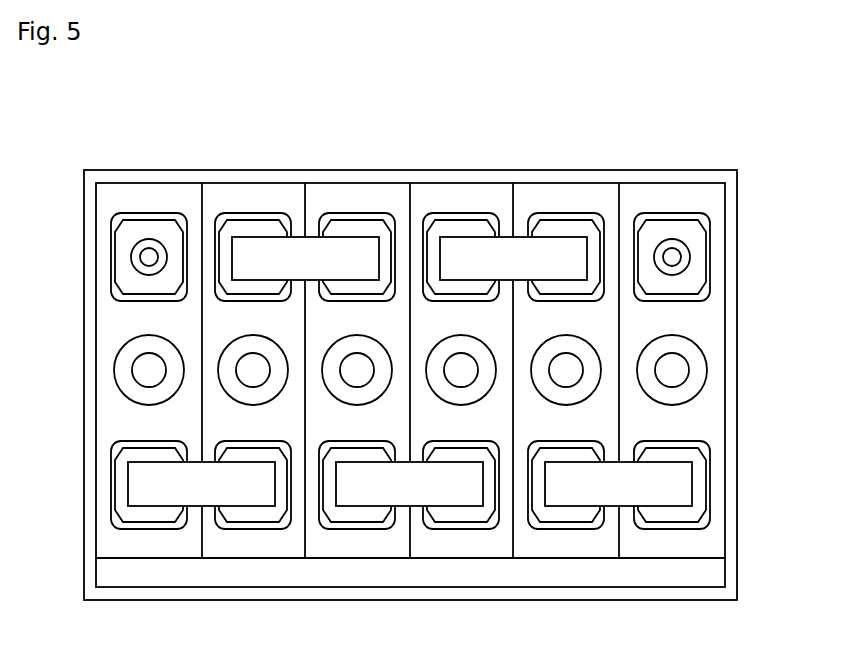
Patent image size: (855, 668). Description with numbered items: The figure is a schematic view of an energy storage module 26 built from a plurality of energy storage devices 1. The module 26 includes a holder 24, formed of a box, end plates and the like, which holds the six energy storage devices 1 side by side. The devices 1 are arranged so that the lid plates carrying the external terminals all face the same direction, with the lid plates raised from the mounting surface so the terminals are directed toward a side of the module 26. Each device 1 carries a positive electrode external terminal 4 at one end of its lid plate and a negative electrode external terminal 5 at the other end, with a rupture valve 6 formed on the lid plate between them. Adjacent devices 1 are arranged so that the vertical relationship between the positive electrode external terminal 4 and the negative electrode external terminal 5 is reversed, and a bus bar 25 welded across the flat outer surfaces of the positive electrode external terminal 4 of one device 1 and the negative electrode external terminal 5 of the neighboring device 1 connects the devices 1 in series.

The energy storage device 1 is at (152, 197).
The positive electrode external terminal 4 is at (112, 257).
The negative electrode external terminal 5 is at (238, 223).
The rupture valve 6 is at (705, 375).
The holder 24 is at (732, 328).
The bus bar 25 is at (298, 245).
The energy storage module 26 is at (708, 99).